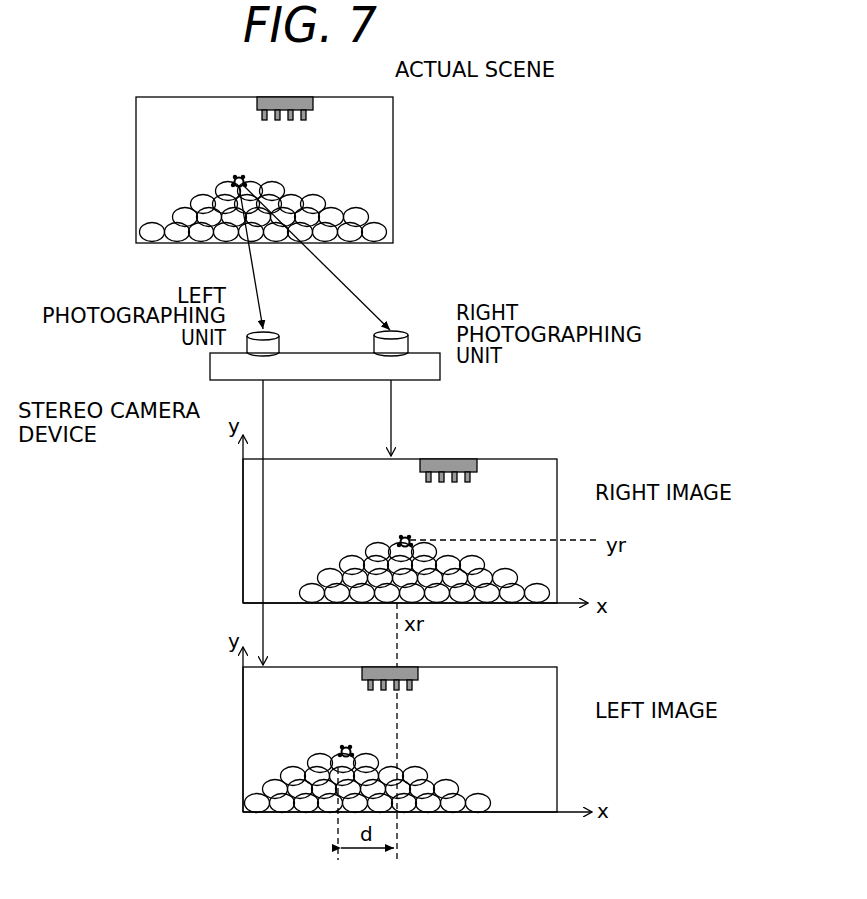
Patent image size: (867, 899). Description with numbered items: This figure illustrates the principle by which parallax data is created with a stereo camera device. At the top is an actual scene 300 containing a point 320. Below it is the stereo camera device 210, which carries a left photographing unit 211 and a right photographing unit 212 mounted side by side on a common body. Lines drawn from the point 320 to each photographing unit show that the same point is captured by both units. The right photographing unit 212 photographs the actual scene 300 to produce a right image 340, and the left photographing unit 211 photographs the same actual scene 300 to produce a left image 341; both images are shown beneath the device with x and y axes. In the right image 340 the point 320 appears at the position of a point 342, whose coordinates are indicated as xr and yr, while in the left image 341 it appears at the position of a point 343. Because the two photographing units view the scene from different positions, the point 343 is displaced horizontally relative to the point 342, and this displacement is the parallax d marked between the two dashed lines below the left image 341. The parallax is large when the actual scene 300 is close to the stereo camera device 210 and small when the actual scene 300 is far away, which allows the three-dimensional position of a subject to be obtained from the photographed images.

The actual scene 300 is at (393, 128).
The point 320 is at (236, 175).
The stereo camera device 210 is at (210, 366).
The left photographing unit 211 is at (282, 336).
The right photographing unit 212 is at (402, 331).
The right image 340 is at (557, 488).
The left image 341 is at (557, 700).
The point 342 is at (400, 538).
The point 343 is at (344, 747).